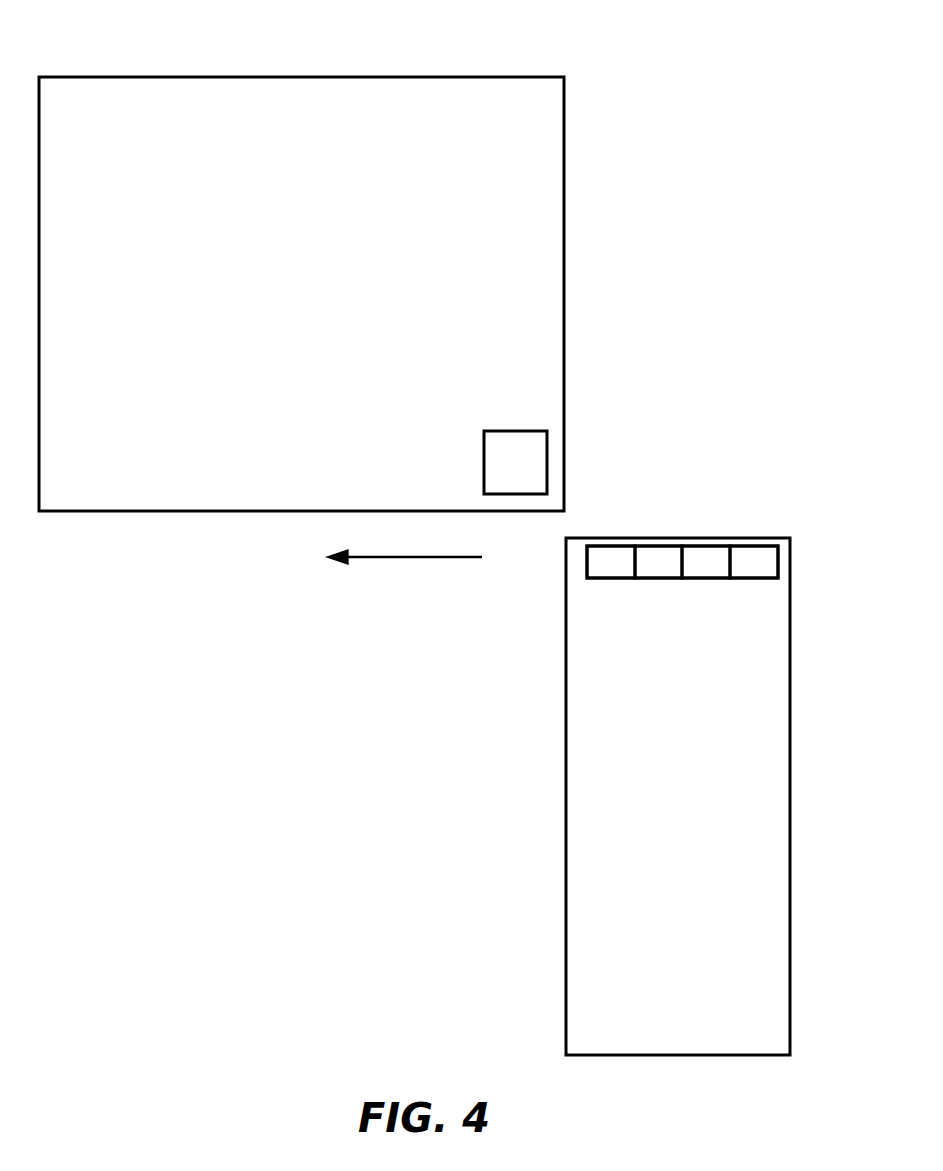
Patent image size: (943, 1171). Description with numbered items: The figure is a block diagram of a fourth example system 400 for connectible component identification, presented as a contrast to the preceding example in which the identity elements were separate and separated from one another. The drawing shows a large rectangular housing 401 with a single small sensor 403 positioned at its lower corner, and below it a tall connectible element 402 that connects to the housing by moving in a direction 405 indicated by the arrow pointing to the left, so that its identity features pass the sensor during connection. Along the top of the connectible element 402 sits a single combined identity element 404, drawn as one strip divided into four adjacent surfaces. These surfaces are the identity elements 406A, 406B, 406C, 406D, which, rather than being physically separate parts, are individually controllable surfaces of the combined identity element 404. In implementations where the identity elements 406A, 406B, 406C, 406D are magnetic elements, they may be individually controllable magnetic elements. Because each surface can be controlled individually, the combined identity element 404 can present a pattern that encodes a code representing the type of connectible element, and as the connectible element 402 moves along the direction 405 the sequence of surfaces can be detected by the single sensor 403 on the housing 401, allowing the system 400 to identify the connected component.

The fourth example system 400 is at (688, 63).
The first device (display panel) 401 is at (566, 271).
The second device 402 is at (791, 634).
The region / target area 403 is at (547, 446).
The combined identity element 404 is at (592, 503).
The direction of movement 405 is at (420, 561).
The identity element 406A is at (592, 545).
The identity element 406B is at (650, 545).
The identity element 406C is at (708, 545).
The identity element 406D is at (770, 545).